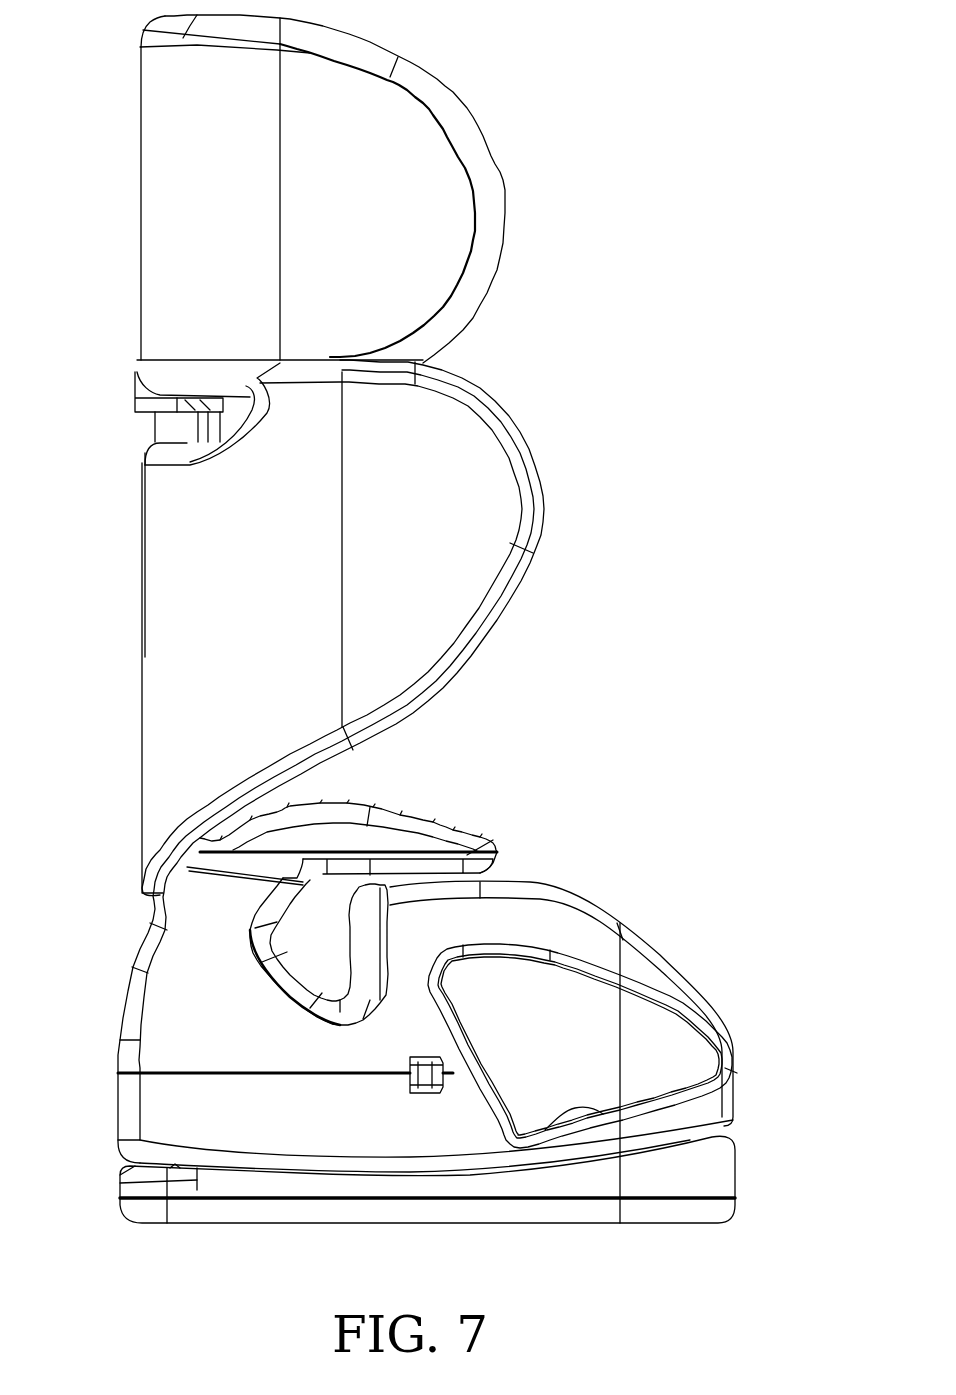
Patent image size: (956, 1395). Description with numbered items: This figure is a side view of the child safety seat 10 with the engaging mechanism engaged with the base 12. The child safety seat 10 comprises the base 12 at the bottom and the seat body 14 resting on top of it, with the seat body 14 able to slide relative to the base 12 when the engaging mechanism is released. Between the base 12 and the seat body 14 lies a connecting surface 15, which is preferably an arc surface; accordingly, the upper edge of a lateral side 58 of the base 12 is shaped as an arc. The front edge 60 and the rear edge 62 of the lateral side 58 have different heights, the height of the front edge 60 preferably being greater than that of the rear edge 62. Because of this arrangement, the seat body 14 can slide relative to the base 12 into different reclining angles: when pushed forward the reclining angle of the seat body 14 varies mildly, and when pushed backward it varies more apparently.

The child safety seat 10 is at (331, 544).
The base 12 is at (740, 1190).
The seat body 14 is at (563, 902).
The connecting surface 15 is at (730, 1130).
The lateral side 58 is at (677, 1213).
The front edge 60 is at (737, 1172).
The rear edge 62 is at (118, 1183).